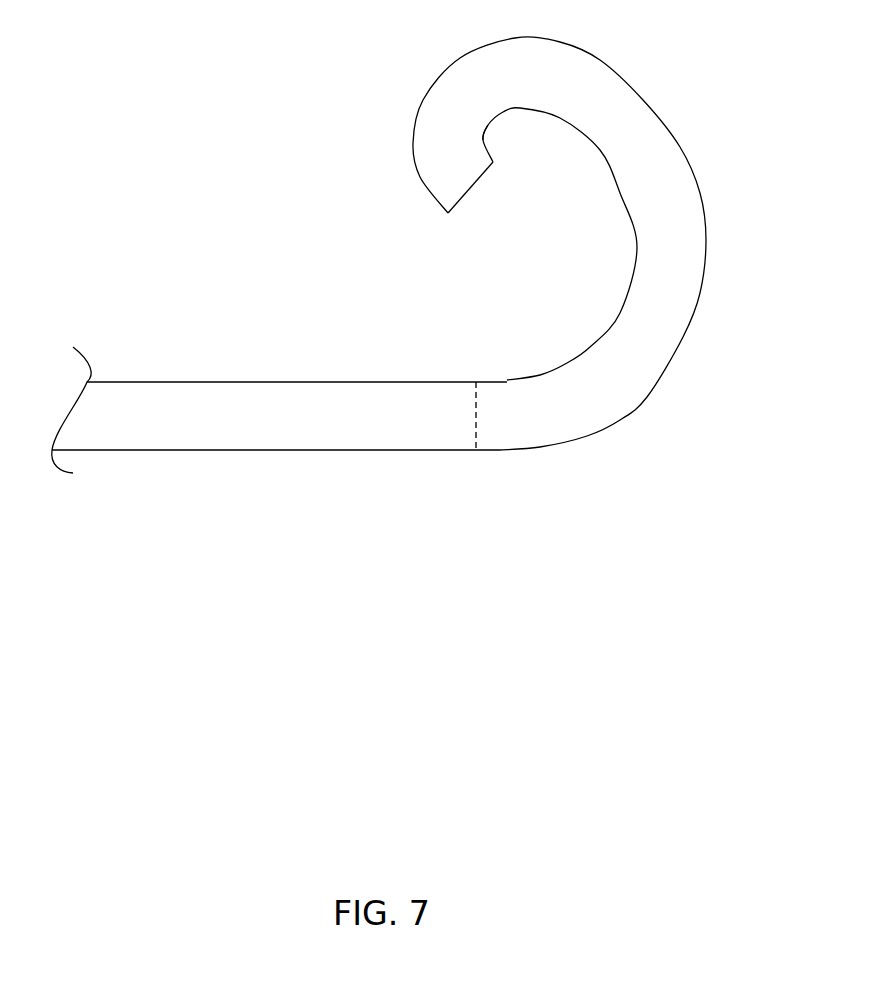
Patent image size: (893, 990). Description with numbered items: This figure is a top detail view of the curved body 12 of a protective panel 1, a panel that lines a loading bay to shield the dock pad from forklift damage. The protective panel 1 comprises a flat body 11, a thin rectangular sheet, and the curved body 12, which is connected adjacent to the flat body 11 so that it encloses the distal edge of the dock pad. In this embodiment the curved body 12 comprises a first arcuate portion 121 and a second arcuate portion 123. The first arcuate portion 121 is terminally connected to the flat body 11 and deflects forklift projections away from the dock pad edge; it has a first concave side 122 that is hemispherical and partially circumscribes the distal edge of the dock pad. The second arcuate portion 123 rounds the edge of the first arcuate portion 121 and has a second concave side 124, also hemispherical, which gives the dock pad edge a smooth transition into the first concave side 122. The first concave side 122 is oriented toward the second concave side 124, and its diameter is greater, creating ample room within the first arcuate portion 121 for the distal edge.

The protective panel 1 is at (316, 105).
The flat body 11 is at (280, 392).
The curved body 12 is at (698, 138).
The first arcuate portion 121 is at (693, 280).
The first concave side 122 is at (635, 265).
The second arcuate portion 123 is at (435, 177).
The second concave side 124 is at (488, 127).